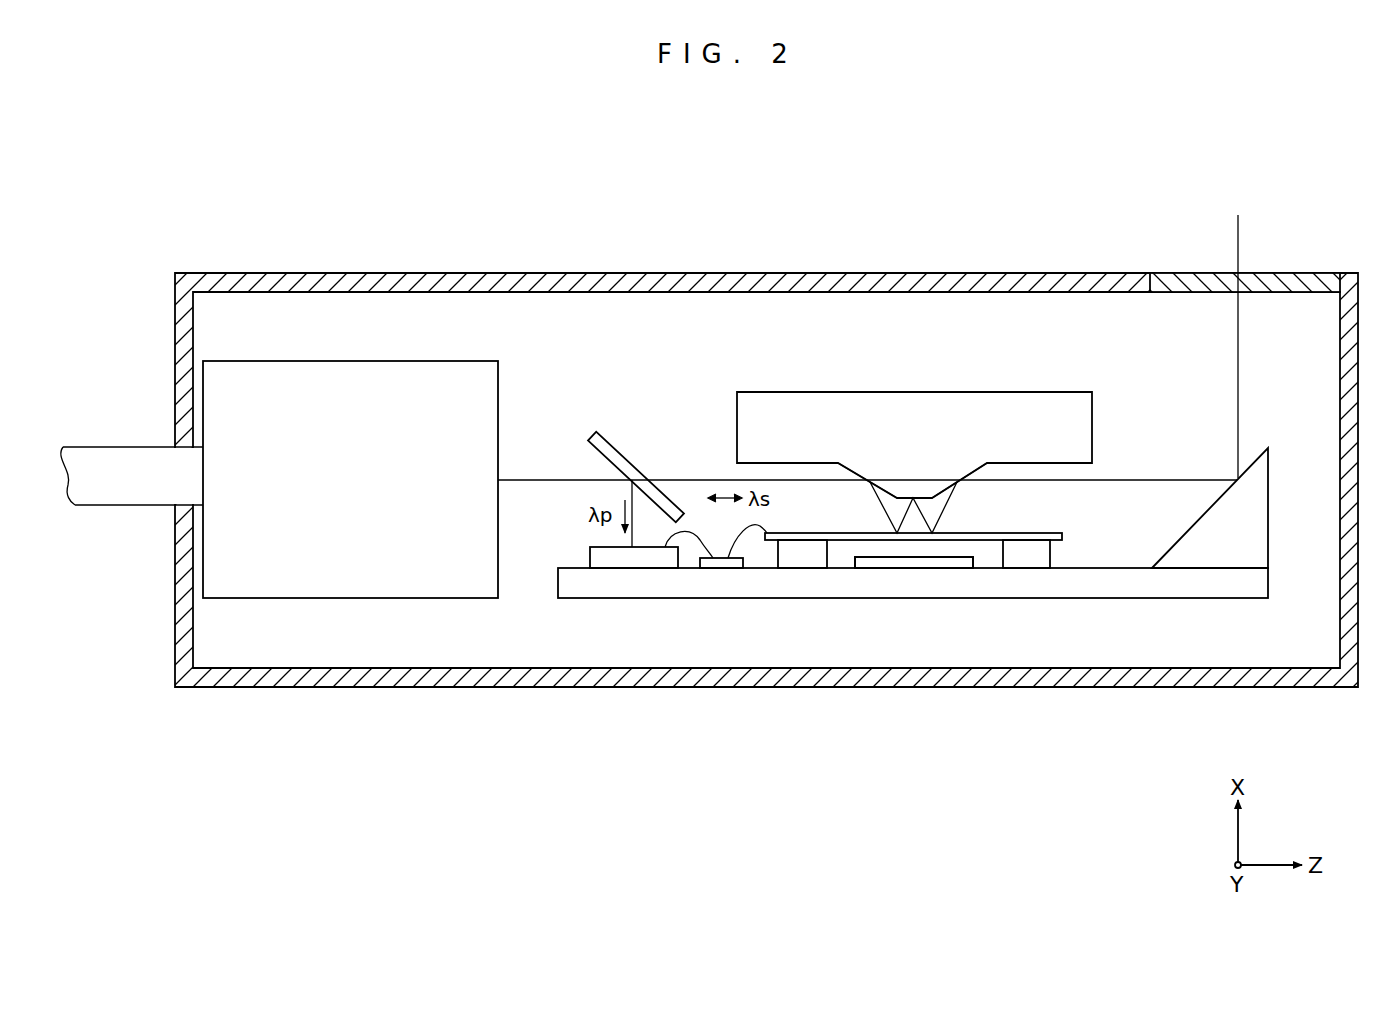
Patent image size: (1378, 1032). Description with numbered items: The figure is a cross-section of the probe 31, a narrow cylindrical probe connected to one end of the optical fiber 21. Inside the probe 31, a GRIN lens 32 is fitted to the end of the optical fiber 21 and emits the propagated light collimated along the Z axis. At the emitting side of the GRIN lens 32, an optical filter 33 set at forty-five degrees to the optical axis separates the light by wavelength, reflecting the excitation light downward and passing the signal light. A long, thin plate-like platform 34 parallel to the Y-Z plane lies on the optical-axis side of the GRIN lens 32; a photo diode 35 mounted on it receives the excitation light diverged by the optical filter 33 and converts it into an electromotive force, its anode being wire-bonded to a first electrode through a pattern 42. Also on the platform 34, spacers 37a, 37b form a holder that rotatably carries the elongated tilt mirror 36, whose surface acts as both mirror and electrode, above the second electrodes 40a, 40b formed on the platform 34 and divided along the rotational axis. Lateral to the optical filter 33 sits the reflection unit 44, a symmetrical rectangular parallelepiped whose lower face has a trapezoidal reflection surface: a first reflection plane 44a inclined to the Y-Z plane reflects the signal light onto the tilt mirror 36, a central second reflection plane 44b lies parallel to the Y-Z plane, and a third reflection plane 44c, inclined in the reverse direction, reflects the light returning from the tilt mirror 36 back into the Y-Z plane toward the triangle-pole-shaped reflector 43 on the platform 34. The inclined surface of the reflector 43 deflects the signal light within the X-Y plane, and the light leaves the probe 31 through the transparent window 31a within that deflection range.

The optical fiber 21 is at (128, 457).
The probe 31 is at (1117, 243).
The transparent window 31a is at (1287, 292).
The GRIN lens 32 is at (312, 362).
The optical filter 33 is at (600, 432).
The platform 34 is at (1115, 585).
The photo diode 35 is at (607, 562).
The tilt mirror 36 is at (973, 542).
The spacer 37a is at (807, 557).
The spacer 37b is at (1015, 558).
The second electrode 40a is at (890, 563).
The light emitting element 40b is at (914, 562).
The pattern 42 is at (725, 560).
The reflector 43 is at (1210, 557).
The reflection unit 44 is at (757, 392).
The first reflection plane 44a is at (857, 472).
The second reflection plane 44b is at (930, 498).
The third reflection plane 44c is at (973, 478).